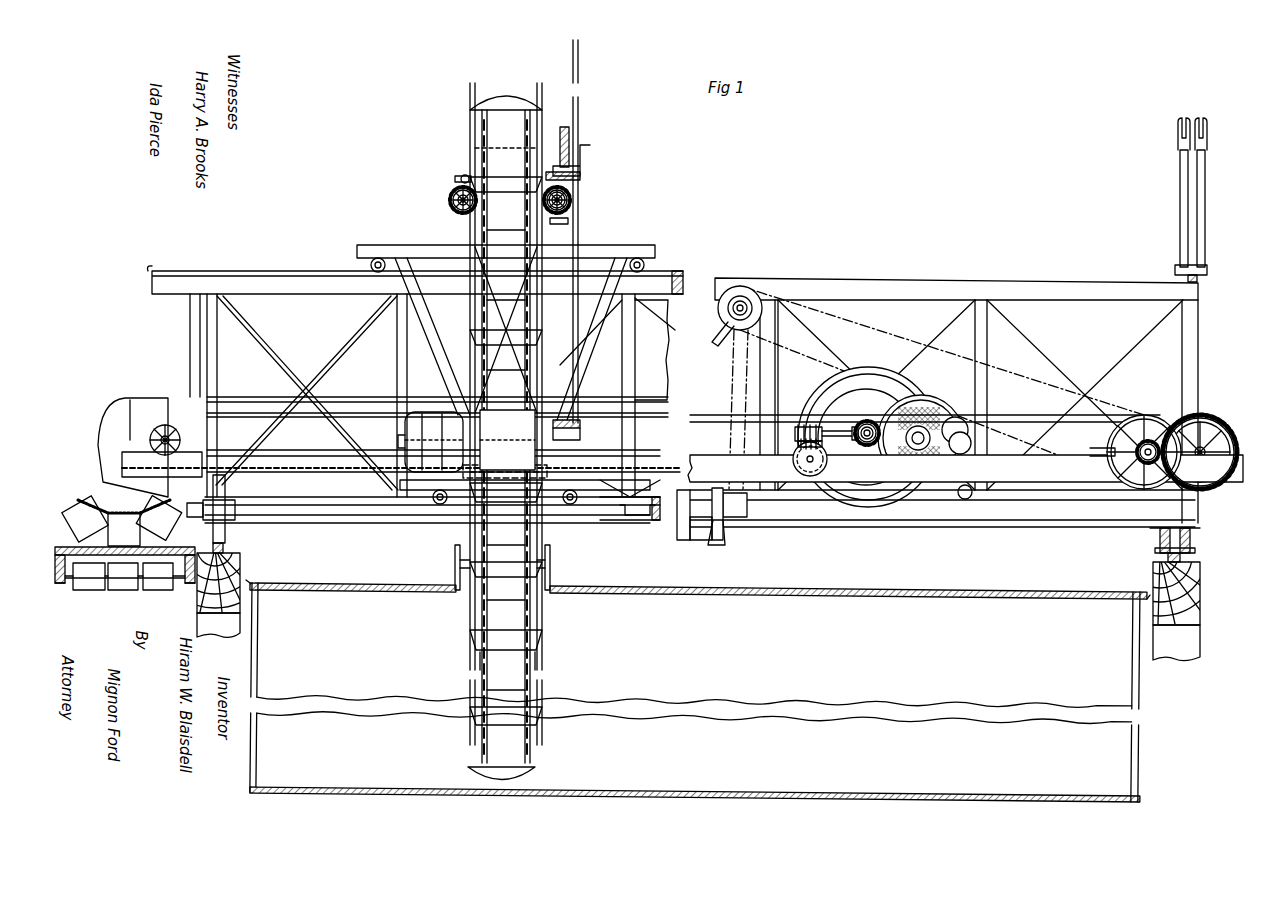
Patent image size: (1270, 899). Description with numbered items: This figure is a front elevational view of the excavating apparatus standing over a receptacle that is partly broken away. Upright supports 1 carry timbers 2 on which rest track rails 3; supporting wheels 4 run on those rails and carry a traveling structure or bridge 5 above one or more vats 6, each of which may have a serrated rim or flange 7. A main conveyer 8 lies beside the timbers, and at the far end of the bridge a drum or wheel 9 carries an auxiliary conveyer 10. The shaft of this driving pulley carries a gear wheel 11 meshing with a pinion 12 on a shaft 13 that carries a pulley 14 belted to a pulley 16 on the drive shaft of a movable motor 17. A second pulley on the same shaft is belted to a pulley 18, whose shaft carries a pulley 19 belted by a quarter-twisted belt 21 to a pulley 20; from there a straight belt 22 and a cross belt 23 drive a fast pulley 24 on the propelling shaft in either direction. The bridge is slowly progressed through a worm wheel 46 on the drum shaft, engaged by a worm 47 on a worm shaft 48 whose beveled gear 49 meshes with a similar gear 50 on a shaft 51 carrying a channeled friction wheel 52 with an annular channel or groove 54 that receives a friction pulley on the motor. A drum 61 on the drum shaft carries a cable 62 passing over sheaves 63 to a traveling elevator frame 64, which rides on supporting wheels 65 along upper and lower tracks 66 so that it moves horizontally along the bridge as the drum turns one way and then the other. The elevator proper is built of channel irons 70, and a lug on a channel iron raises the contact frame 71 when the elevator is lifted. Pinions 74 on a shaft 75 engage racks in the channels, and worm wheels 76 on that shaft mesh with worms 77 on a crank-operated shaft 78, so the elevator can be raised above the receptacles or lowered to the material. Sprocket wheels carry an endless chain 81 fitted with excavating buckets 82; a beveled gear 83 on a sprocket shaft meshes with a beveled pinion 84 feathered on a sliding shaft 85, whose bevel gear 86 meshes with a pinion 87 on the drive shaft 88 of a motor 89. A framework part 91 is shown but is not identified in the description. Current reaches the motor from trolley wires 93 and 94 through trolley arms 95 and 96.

The upright supports 1 is at (698, 637).
The timbers 2 is at (241, 562).
The track rails 3 is at (226, 548).
The supporting wheels 4 is at (228, 530).
The traveling structure or bridge 5 is at (890, 265).
The vats 6 is at (696, 692).
The serrated rim or flange 7 is at (698, 583).
The main conveyer 8 is at (90, 508).
The drum or wheel 9 is at (168, 424).
The auxiliary conveyer 10 is at (925, 408).
The gear wheel 11 is at (1237, 445).
The pinion 12 is at (1145, 462).
The shaft 13 is at (1125, 455).
The pulley 14 is at (1144, 437).
The pulley 16 is at (926, 435).
The movable motor 17 is at (921, 434).
The pulley 18 is at (755, 302).
The pulley 19 is at (725, 312).
The pulley 20 is at (719, 514).
The quarter-twisted belt 21 is at (928, 388).
The straight belt 22 is at (677, 525).
The cross belt 23 is at (720, 546).
The fast pulley 24 is at (700, 540).
The worm wheel 46 is at (855, 441).
The worm 47 is at (800, 435).
The worm shaft 48 is at (835, 431).
The beveled gear 49 is at (864, 446).
The beveled gear 50 is at (870, 446).
The shaft 51 is at (868, 446).
The channeled friction wheel 52 is at (866, 437).
The annular channel or groove 54 is at (868, 437).
The drum 61 is at (797, 465).
The cable 62 is at (296, 466).
The sheaves 63 is at (165, 466).
The traveling elevator frame 64 is at (567, 203).
The supporting wheels 65 is at (370, 262).
The upper and lower tracks 66 is at (250, 270).
The channel irons 70 is at (545, 600).
The contact frame 71 is at (551, 575).
The pinions 74 is at (455, 205).
The shaft 75 is at (452, 200).
The worm wheels 76 is at (454, 184).
The worms 77 is at (461, 178).
The operating shaft 78 is at (583, 180).
The endless chain 81 is at (533, 122).
The excavating buckets 82 is at (505, 477).
The beveled gear 83 is at (575, 133).
The beveled pinion 84 is at (583, 170).
The sliding shaft 85 is at (579, 300).
The bevel gear 86 is at (583, 425).
The pinion 87 is at (583, 440).
The drive shaft 88 is at (507, 440).
The motor 89 is at (430, 442).
The truss frame 91 is at (416, 393).
The trolley wire 93 is at (1178, 122).
The trolley wire 94 is at (1207, 122).
The trolley arm 95 is at (1180, 208).
The trolley arm 96 is at (1218, 205).